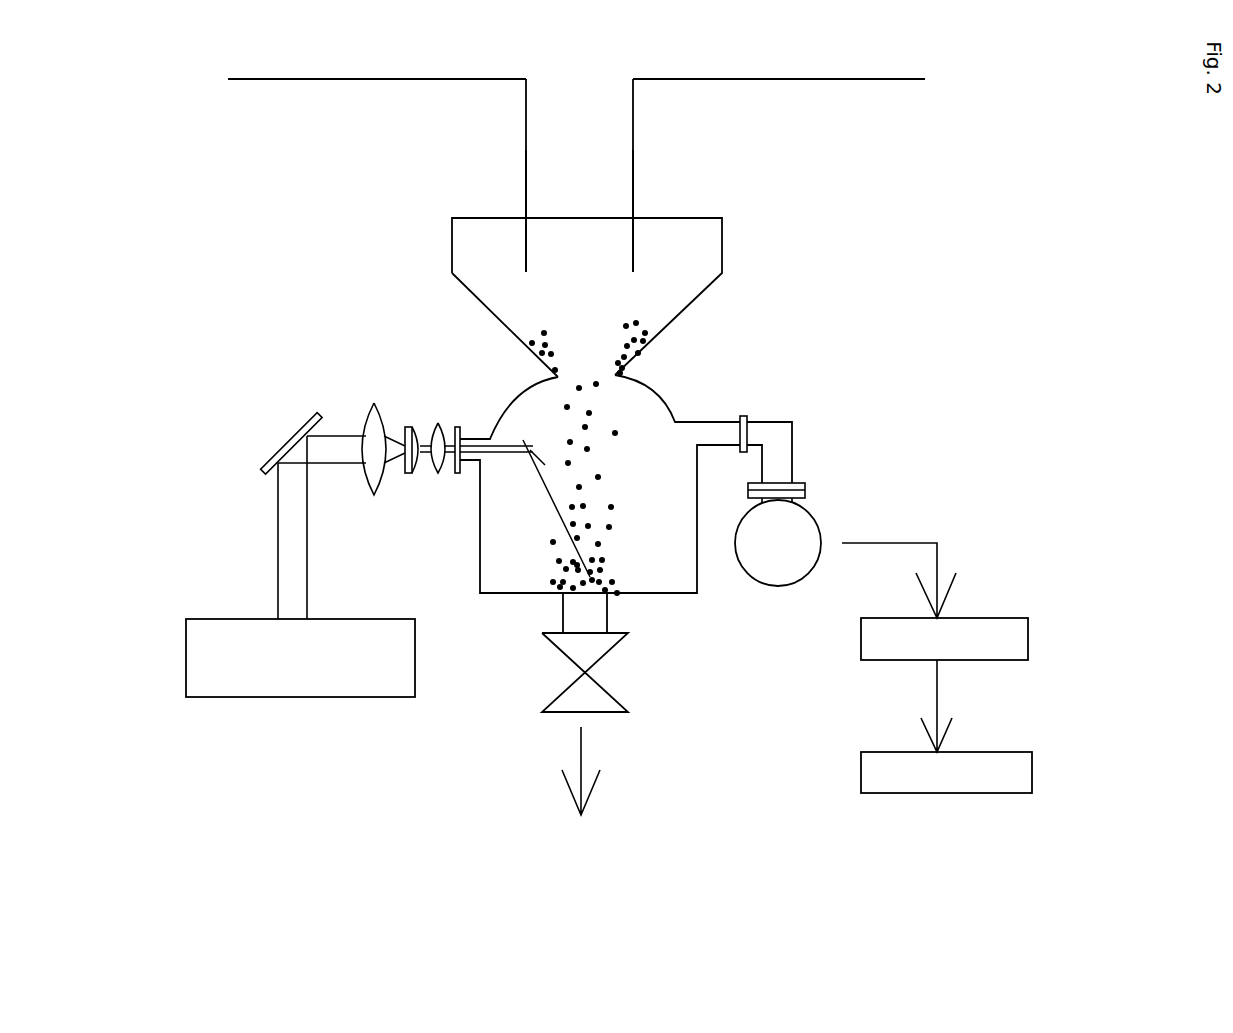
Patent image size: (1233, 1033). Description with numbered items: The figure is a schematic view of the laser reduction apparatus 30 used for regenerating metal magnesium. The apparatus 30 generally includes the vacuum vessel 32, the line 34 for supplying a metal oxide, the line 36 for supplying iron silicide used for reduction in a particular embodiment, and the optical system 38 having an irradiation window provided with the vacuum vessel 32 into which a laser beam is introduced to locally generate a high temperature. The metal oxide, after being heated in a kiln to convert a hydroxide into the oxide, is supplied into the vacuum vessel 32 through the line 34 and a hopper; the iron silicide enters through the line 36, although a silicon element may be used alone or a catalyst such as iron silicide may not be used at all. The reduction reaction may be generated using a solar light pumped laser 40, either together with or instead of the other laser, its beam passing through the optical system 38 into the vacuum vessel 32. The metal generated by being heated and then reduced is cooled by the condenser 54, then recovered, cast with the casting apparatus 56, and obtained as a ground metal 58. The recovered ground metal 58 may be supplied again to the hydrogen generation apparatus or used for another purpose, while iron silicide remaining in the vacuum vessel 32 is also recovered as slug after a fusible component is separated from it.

The apparatus 30 is at (822, 367).
The vacuum vessel 32 is at (615, 422).
The line for supplying a metal oxide 34 is at (458, 79).
The line for supplying iron silicide 36 is at (690, 79).
The optical system 38 is at (450, 402).
The solar light pumped laser 40 is at (205, 665).
The condenser 54 is at (772, 458).
The casting apparatus 56 is at (1021, 618).
The ground metal 58 is at (1022, 752).